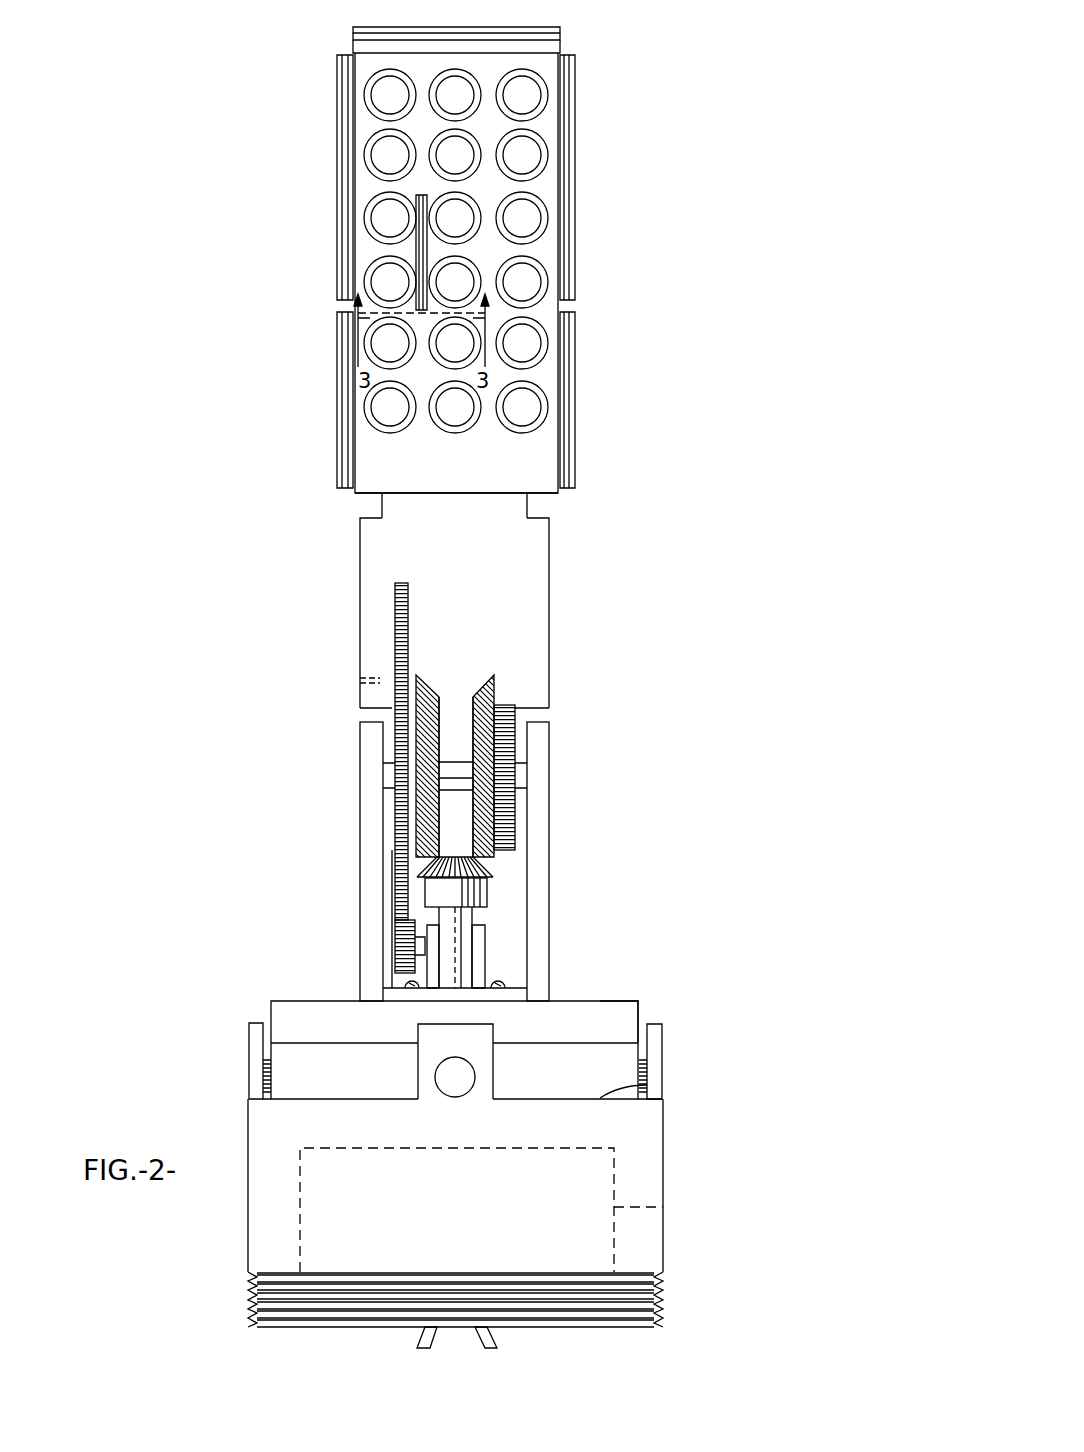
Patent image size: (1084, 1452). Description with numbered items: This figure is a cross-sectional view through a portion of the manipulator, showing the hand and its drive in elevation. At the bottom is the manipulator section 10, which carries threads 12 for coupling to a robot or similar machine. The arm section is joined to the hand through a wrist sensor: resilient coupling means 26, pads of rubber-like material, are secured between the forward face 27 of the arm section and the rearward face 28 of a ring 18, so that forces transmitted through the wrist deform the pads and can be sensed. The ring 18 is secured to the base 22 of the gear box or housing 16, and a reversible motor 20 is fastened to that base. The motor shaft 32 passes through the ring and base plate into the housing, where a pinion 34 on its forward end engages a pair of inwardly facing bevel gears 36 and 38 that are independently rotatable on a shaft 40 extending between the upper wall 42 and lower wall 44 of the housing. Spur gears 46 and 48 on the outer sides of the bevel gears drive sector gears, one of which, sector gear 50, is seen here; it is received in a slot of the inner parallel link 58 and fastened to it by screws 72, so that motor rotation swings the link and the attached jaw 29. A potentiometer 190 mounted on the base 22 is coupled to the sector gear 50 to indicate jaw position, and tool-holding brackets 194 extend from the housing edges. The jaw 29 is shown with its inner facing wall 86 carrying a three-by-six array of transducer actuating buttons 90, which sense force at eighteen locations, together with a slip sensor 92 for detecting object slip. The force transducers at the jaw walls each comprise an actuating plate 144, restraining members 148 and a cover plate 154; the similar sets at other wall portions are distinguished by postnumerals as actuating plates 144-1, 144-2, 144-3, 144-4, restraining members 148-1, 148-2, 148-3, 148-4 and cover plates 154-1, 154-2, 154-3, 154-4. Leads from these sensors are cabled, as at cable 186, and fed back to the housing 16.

The manipulator section 10 is at (663, 1165).
The threads 12 is at (663, 1280).
The gear box or housing 16 is at (370, 892).
The ring 18 is at (610, 1015).
The reversible motor 20 is at (663, 1207).
The base 22 is at (390, 996).
The resilient coupling means 26 is at (290, 1075).
The forward face 27 is at (615, 1098).
The rearward face 28 is at (648, 1063).
The jaw 29 is at (365, 470).
The motor shaft 32 is at (465, 937).
The pinion 34 is at (487, 880).
The bevel gear 36 is at (424, 690).
The bevel gear 38 is at (484, 688).
The shaft 40 is at (455, 760).
The upper wall 42 is at (365, 795).
The lower wall 44 is at (548, 748).
The spur gear 46 is at (385, 722).
The spur gear 48 is at (505, 708).
The sector gear 50 is at (398, 862).
The parallel link 58 is at (375, 565).
The screws 72 is at (378, 678).
The inner facing walls 86 is at (535, 470).
The transducer actuating means 90 is at (535, 213).
The slip sensors 92 is at (417, 192).
The actuating plate 144 is at (343, 110).
The restraining members 148 is at (348, 78).
The cover plate 154 is at (337, 150).
The actuating plate 144-1 is at (348, 422).
The restraining members 148-1 is at (353, 452).
The cover plate 154-1 is at (343, 392).
The actuating plate 144-2 is at (495, 40).
The restraining members 148-2 is at (562, 53).
The cover plate 154-2 is at (398, 32).
The actuating plate 144-3 is at (566, 125).
The restraining members 148-3 is at (560, 92).
The cover plate 154-3 is at (572, 160).
The actuating plate 144-4 is at (564, 400).
The restraining members 148-4 is at (562, 335).
The cover plate 154-4 is at (577, 445).
The cable 186 is at (422, 1340).
The potentiometer 190 is at (478, 970).
The brackets 194 is at (398, 946).